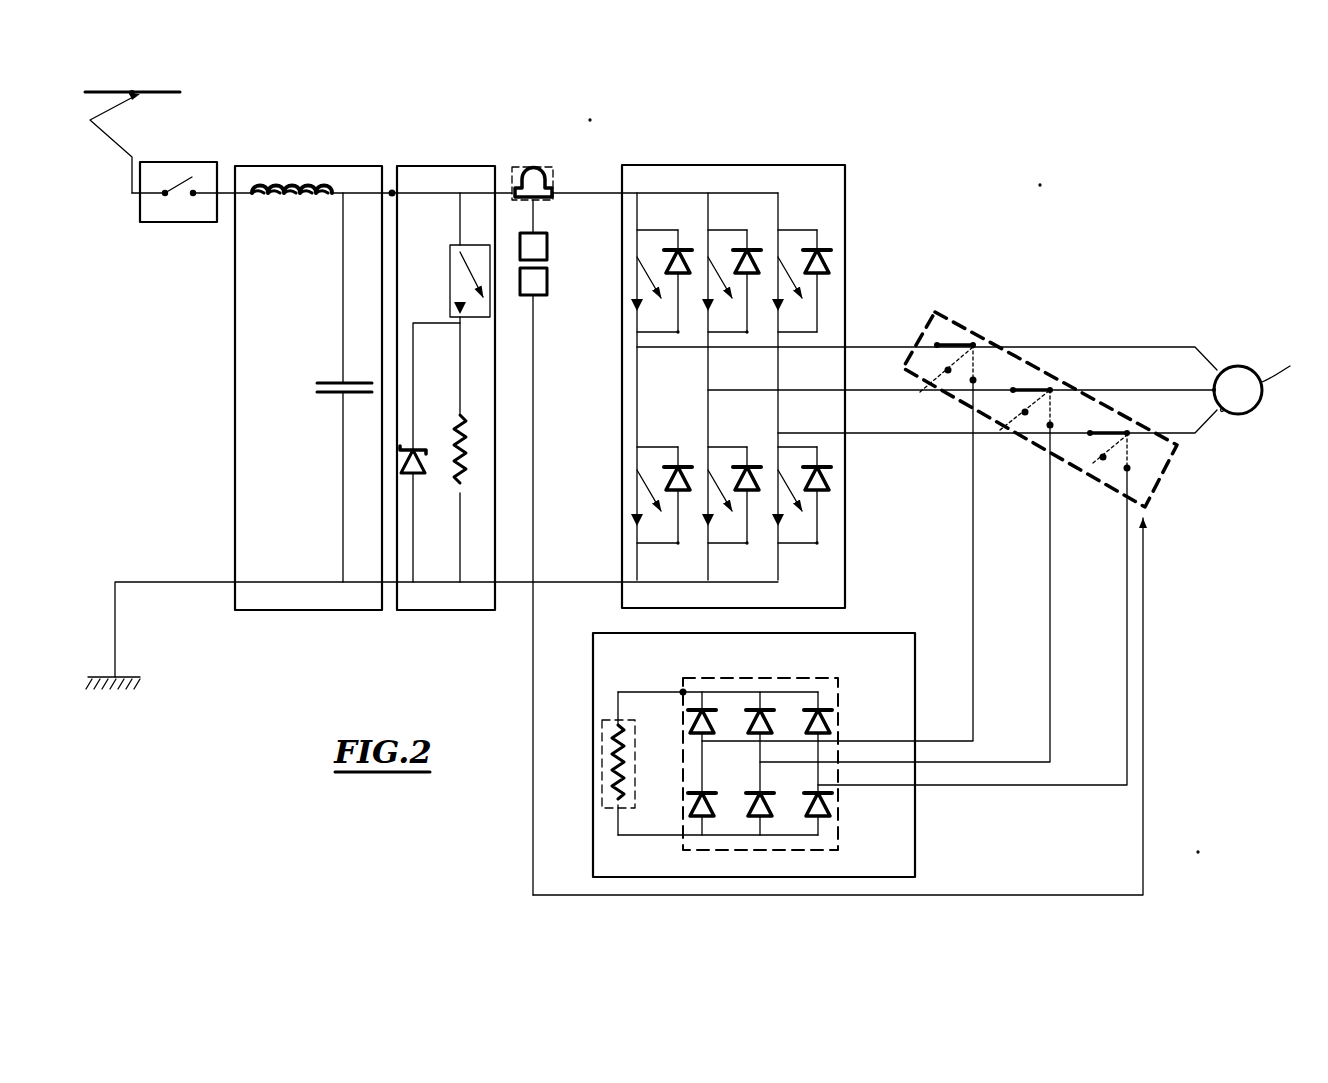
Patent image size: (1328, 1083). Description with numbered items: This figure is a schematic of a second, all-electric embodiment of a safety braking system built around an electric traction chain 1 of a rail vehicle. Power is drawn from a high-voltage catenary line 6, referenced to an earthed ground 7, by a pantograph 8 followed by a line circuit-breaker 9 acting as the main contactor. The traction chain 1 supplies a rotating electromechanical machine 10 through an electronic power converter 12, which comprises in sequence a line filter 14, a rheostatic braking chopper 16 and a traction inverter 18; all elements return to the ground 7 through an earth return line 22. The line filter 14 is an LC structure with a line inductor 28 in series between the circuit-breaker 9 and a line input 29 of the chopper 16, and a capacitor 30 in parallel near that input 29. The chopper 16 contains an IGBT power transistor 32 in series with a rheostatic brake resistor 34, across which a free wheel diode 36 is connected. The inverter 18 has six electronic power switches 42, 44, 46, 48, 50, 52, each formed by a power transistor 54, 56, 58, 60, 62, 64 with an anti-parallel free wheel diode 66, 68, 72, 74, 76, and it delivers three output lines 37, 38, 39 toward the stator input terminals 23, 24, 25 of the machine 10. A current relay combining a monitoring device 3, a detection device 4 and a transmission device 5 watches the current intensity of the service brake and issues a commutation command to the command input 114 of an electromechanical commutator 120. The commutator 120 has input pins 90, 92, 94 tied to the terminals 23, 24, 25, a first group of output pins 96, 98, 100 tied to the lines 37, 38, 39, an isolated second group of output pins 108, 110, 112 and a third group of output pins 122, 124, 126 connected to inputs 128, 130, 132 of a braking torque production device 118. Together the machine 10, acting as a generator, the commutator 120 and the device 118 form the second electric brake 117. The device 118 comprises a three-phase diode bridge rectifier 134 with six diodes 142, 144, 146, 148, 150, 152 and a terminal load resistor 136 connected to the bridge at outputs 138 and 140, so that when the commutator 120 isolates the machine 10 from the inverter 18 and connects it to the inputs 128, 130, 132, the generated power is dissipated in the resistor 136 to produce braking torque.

The electric traction chain 1 is at (1040, 176).
The monitoring device 3 is at (534, 164).
The detection device 4 is at (548, 244).
The transmission device 5 is at (548, 280).
The catenary line 6 is at (163, 94).
The ground 7 is at (100, 677).
The pantograph 8 is at (112, 138).
The line circuit-breaker 9 is at (172, 222).
The rotating electromechanical machine 10 is at (1290, 366).
The electronic power converter 12 is at (586, 110).
The line filter 14 is at (301, 163).
The rheostatic braking chopper 16 is at (438, 163).
The traction inverter 18 is at (822, 162).
The earth return line 22 is at (175, 582).
The electrical input terminal 23 is at (1221, 367).
The electrical input terminal 24 is at (1208, 386).
The electrical input terminal 25 is at (1222, 412).
The line inductor 28 is at (291, 199).
The line input 29 is at (392, 190).
The capacitor 30 is at (335, 383).
The power transistor 32 is at (468, 243).
The rheostatic brake resistor 34 is at (457, 440).
The free wheel diode 36 is at (419, 476).
The output line 37 is at (652, 350).
The output line 38 is at (778, 390).
The output line 39 is at (864, 436).
The electronic power switch 42 is at (684, 244).
The electronic power switch 44 is at (754, 244).
The electronic power switch 46 is at (828, 243).
The electronic power switch 48 is at (684, 460).
The electronic power switch 50 is at (754, 460).
The electronic power switch 52 is at (826, 455).
The power transistor 54 is at (655, 272).
The power transistor 56 is at (725, 272).
The power transistor 58 is at (790, 268).
The power transistor 60 is at (655, 485).
The power transistor 62 is at (725, 485).
The power transistor 64 is at (790, 470).
The free wheel diode 66 is at (681, 286).
The free wheel diode 68 is at (751, 286).
The free wheel diode 72 is at (682, 494).
The free wheel diode 74 is at (752, 494).
The free wheel diode 76 is at (822, 494).
The input pin 90 is at (973, 345).
The input pin 92 is at (1050, 390).
The input pin 94 is at (1127, 433).
The output pin 96 is at (937, 345).
The output pin 98 is at (1013, 390).
The output pin 100 is at (1090, 433).
The output pin 108 is at (903, 368).
The output pin 110 is at (1000, 431).
The output pin 112 is at (1094, 465).
The command input 114 is at (1146, 512).
The electric brake 117 is at (1200, 851).
The braking torque production device 118 is at (870, 631).
The electromechanical commutator 120 is at (932, 305).
The output pin 122 is at (970, 384).
The output pin 124 is at (1049, 428).
The output pin 126 is at (1128, 471).
The input 128 is at (920, 741).
The input 130 is at (920, 762).
The input 132 is at (920, 785).
The diode bridge rectifier 134 is at (842, 718).
The terminal load resistor 136 is at (602, 783).
The output 138 is at (682, 691).
The output 140 is at (683, 836).
The diode 142 is at (714, 705).
The diode 144 is at (776, 705).
The diode 146 is at (830, 705).
The diode 148 is at (714, 803).
The diode 150 is at (772, 822).
The diode 152 is at (836, 822).